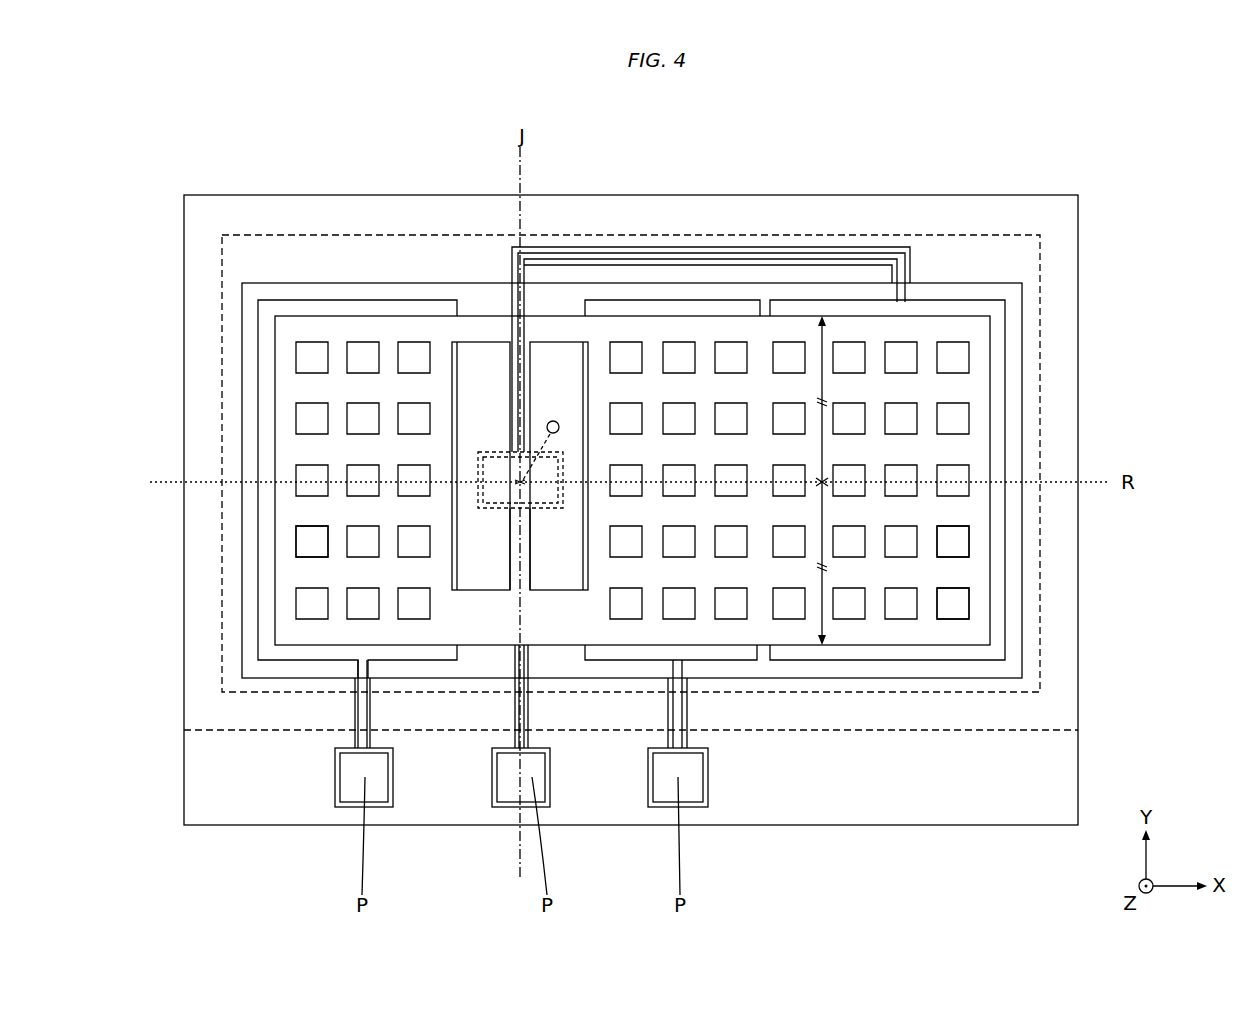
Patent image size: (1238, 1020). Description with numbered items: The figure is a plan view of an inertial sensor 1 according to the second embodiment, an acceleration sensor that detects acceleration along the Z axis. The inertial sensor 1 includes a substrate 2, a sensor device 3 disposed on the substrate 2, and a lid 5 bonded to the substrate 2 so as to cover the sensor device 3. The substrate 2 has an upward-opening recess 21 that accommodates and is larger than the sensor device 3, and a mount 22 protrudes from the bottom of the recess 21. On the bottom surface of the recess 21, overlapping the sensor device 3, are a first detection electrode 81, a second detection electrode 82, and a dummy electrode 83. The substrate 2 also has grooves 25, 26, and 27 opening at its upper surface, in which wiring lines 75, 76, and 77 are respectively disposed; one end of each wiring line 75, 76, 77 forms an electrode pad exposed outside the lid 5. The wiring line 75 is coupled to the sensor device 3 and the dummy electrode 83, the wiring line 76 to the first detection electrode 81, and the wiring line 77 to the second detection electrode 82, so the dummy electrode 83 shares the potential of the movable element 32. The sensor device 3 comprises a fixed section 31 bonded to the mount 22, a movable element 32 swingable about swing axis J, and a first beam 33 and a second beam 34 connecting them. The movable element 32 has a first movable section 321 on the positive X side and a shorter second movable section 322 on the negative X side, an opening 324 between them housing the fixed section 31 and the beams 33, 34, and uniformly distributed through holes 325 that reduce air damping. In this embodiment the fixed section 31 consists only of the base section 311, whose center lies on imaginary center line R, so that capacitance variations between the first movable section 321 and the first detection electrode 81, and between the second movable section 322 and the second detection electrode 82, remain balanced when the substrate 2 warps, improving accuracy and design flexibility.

The inertial sensor 1 is at (1066, 169).
The substrate 2 is at (1050, 825).
The sensor device 3 is at (709, 314).
The lid 5 is at (396, 232).
The recess 21 is at (970, 680).
The mount 22 is at (497, 450).
The groove 25 is at (512, 713).
The groove 26 is at (668, 713).
The groove 27 is at (356, 716).
The fixed section 31 is at (477, 462).
The base section 311 is at (505, 495).
The movable element 32 is at (874, 330).
The first movable section 321 is at (966, 387).
The second movable section 322 is at (292, 388).
The opening 324 is at (492, 340).
The through holes 325 is at (312, 540).
The first beam 33 is at (530, 368).
The second beam 34 is at (515, 563).
The wiring line 75 is at (531, 712).
The wiring line 76 is at (688, 712).
The wiring line 77 is at (368, 711).
The first detection electrode 81 is at (748, 653).
The second detection electrode 82 is at (298, 652).
The dummy electrode 83 is at (897, 653).